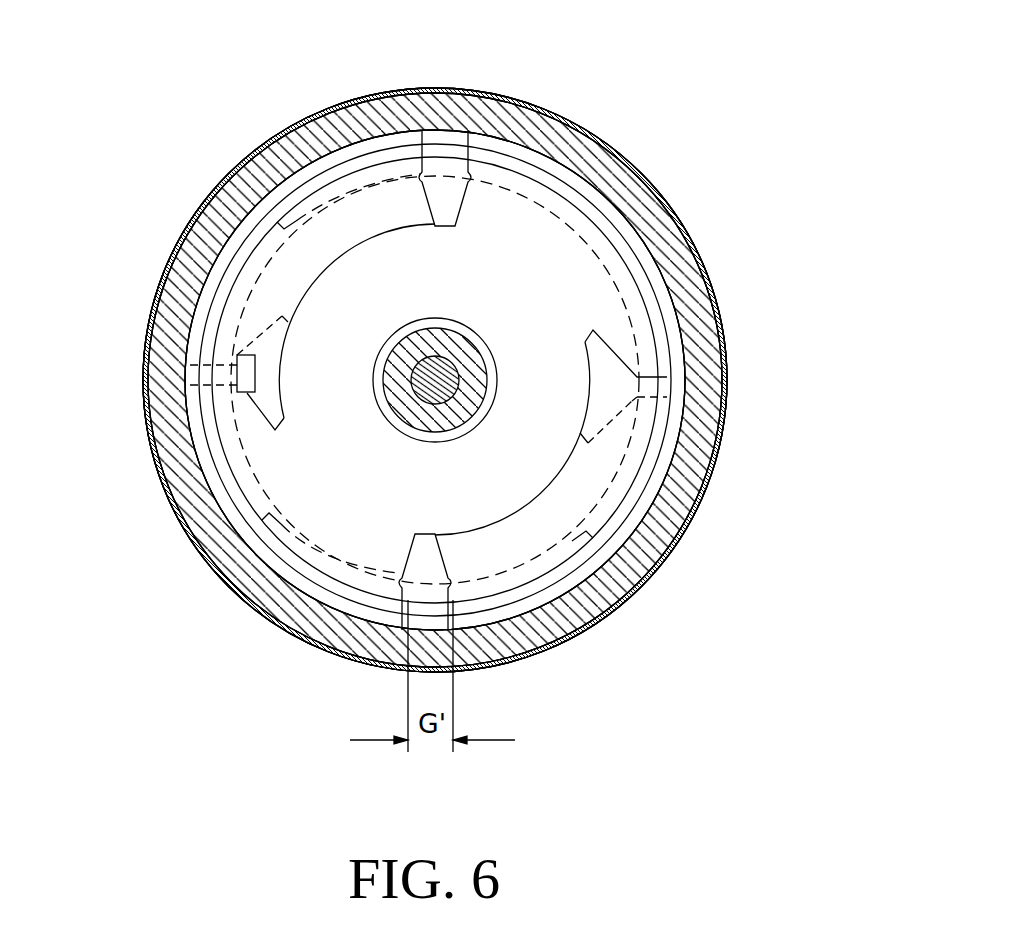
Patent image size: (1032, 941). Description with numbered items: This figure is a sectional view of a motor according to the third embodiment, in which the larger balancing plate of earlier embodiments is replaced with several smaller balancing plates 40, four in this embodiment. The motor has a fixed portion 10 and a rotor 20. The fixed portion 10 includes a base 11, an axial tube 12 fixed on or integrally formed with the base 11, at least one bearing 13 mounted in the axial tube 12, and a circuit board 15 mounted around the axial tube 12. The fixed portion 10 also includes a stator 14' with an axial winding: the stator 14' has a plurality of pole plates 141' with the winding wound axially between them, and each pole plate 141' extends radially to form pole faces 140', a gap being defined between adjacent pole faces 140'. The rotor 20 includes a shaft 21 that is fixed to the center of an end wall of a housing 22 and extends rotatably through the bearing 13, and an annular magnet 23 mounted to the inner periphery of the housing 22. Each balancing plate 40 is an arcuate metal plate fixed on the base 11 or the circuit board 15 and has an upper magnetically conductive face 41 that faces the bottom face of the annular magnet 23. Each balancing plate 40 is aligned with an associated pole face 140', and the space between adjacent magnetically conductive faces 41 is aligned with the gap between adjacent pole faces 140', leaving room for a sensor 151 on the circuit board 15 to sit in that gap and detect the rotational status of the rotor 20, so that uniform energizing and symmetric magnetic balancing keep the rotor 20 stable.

The fixed portion 10 is at (713, 26).
The base 11 is at (690, 372).
The axial tube 12 is at (458, 325).
The bearing 13 is at (468, 363).
The stator 14' is at (549, 380).
The pole face 140' is at (511, 380).
The pole plate 141' is at (695, 318).
The circuit board 15 is at (435, 380).
The sensor 151 is at (237, 357).
The rotor 20 is at (852, 520).
The shaft 21 is at (462, 387).
The housing 22 is at (657, 568).
The annular magnet 23 is at (657, 531).
The balancing plate 40 is at (163, 509).
The magnetically conductive face 41 is at (232, 548).